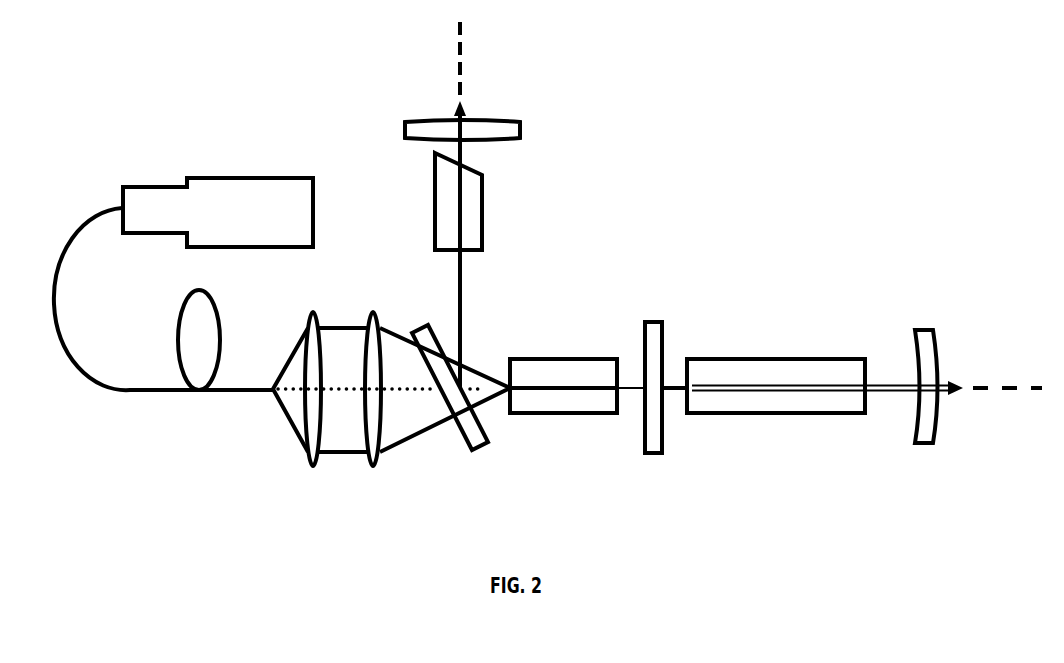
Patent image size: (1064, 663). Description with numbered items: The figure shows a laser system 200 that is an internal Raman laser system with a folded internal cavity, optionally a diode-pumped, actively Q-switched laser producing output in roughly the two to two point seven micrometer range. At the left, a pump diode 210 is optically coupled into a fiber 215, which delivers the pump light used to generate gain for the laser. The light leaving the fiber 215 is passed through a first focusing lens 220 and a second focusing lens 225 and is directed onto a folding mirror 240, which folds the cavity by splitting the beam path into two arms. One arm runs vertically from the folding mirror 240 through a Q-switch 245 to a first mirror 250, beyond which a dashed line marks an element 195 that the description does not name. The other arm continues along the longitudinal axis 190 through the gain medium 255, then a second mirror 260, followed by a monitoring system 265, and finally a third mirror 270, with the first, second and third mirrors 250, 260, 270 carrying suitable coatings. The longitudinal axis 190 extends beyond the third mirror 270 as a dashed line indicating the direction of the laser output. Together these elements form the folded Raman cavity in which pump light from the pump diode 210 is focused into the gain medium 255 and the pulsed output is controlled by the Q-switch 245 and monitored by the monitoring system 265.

The longitudinal axis 190 is at (1020, 393).
The reflected output beam 195 is at (458, 60).
The laser system 200 is at (99, 147).
The pump diode 210 is at (314, 182).
The fiber 215 is at (96, 382).
The first focusing lens 220 is at (312, 463).
The second focusing lens 225 is at (380, 465).
The folding mirror 240 is at (488, 445).
The Q-switch 245 is at (483, 208).
The first mirror 250 is at (508, 122).
The gain medium 255 is at (535, 360).
The second mirror 260 is at (645, 322).
The monitoring system 265 is at (812, 345).
The third mirror 270 is at (920, 330).